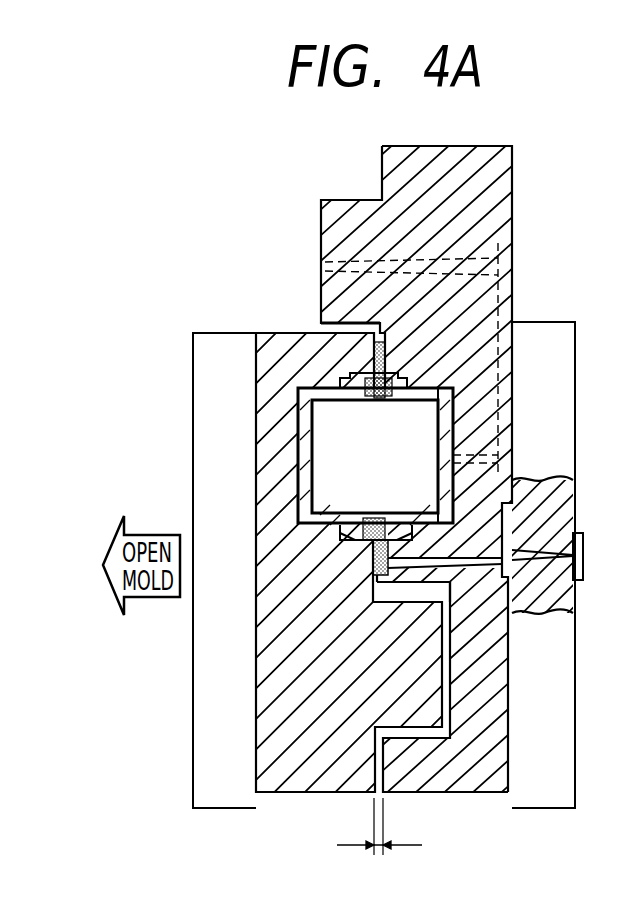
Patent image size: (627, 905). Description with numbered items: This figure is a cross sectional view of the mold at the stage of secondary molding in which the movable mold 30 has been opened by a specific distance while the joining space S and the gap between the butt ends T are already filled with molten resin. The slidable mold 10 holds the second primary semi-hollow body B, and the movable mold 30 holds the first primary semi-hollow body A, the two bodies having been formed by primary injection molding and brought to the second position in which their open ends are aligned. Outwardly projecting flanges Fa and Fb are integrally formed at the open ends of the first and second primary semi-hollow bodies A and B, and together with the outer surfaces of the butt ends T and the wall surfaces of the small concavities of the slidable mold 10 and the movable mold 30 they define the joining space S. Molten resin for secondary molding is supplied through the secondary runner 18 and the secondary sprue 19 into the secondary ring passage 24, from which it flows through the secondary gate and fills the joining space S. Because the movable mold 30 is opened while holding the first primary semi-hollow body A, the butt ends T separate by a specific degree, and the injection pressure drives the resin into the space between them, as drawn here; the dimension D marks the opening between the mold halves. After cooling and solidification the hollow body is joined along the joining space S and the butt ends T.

The slidable mold 10 is at (506, 187).
The movable mold 30 is at (276, 340).
The first primary semi-hollow body A is at (299, 437).
The second primary semi-hollow body B is at (452, 413).
The joining space S is at (378, 512).
The butt ends T is at (396, 402).
The flange Fa is at (348, 378).
The flange Fb is at (406, 378).
The secondary ring passage 24 is at (376, 557).
The secondary sprue 19 is at (466, 572).
The secondary runner 18 is at (514, 517).
The gap distance D is at (381, 826).